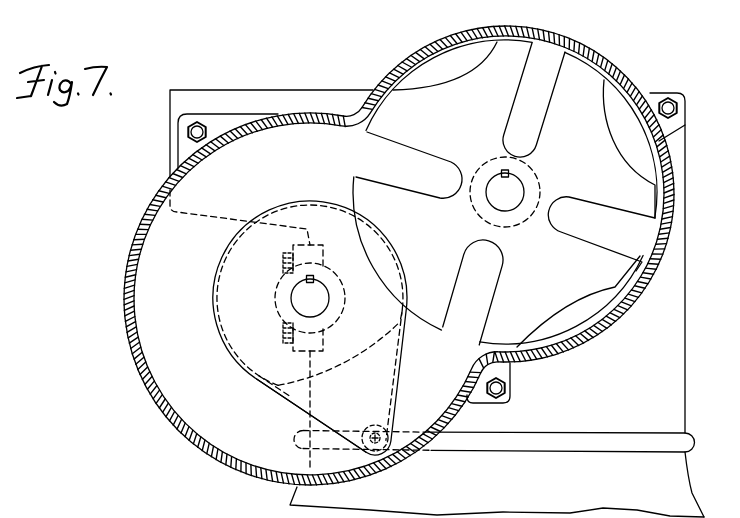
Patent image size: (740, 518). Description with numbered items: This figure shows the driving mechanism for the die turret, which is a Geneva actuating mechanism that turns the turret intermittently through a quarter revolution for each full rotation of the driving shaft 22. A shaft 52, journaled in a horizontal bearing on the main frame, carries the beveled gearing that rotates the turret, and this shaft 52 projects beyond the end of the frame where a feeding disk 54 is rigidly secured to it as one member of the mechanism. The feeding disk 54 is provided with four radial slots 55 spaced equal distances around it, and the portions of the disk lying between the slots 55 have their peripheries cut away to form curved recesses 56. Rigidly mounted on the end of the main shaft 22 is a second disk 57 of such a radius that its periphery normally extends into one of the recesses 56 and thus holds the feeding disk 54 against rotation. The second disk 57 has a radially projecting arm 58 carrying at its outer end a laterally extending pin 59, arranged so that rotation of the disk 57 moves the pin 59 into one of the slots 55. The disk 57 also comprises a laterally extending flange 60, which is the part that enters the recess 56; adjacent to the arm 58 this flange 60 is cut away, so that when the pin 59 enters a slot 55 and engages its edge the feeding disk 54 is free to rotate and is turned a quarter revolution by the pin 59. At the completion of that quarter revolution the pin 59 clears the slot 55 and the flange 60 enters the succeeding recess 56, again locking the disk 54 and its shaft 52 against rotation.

The driving shaft 22 is at (306, 298).
The shaft 52 is at (515, 188).
The feeding disk 54 is at (613, 288).
The radial slots 55 is at (397, 162).
The curved recesses 56 is at (461, 60).
The second disk 57 is at (233, 256).
The radially projecting arm 58 is at (391, 388).
The pin 59 is at (370, 429).
The flange 60 is at (247, 365).